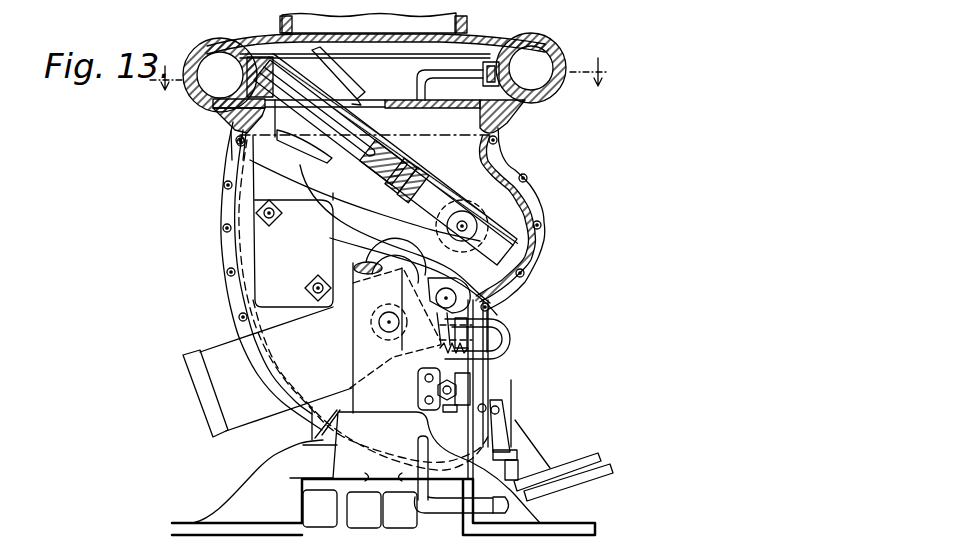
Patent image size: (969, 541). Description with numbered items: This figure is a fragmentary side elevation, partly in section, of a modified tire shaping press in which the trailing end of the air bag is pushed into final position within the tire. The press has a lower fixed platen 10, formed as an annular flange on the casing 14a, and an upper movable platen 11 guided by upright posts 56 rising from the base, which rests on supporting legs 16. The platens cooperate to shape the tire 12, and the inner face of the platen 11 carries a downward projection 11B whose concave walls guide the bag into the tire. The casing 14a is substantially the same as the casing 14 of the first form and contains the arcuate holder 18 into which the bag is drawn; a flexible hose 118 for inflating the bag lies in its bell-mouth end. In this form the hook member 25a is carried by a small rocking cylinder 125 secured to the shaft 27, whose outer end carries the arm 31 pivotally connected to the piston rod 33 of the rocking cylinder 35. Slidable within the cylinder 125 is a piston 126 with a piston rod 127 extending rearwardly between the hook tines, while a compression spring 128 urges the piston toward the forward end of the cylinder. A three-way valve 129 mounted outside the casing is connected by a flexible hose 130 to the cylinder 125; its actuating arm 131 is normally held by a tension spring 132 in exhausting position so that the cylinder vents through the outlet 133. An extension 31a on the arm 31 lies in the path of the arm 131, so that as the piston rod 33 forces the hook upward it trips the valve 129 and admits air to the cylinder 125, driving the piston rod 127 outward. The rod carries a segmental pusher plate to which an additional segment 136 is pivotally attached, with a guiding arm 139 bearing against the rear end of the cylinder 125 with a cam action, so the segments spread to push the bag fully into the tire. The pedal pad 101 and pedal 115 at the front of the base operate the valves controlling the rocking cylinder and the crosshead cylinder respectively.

The lower fixed platen 10 is at (517, 123).
The upper movable platen 11 is at (490, 40).
The downward projection 11B is at (234, 130).
The tire 12 is at (563, 58).
The casing 14 is at (386, 86).
The casing 14a is at (212, 222).
The supporting legs 16 is at (248, 502).
The arcuate holder 18 is at (250, 160).
The hook member 25a is at (470, 120).
The shaft 27 is at (471, 241).
The arm 31 is at (434, 286).
The extension 31a is at (497, 338).
The piston rod 33 is at (437, 355).
The rocking cylinder 35 is at (267, 372).
The upright posts 56 is at (415, 456).
The pedal pad 101 is at (605, 470).
The pedal 115 is at (588, 462).
The flexible hose 118 is at (420, 68).
The rocking cylinder 125 is at (494, 217).
The piston 126 is at (408, 187).
The piston rod 127 is at (331, 123).
The compression spring 128 is at (418, 148).
The three-way valve 129 is at (458, 390).
The flexible hose 130 is at (396, 256).
The actuating arm 131 is at (430, 366).
The tension spring 132 is at (504, 351).
The outlet 133 is at (454, 406).
The additional segment 136 is at (256, 76).
The guiding arm 139 is at (330, 66).